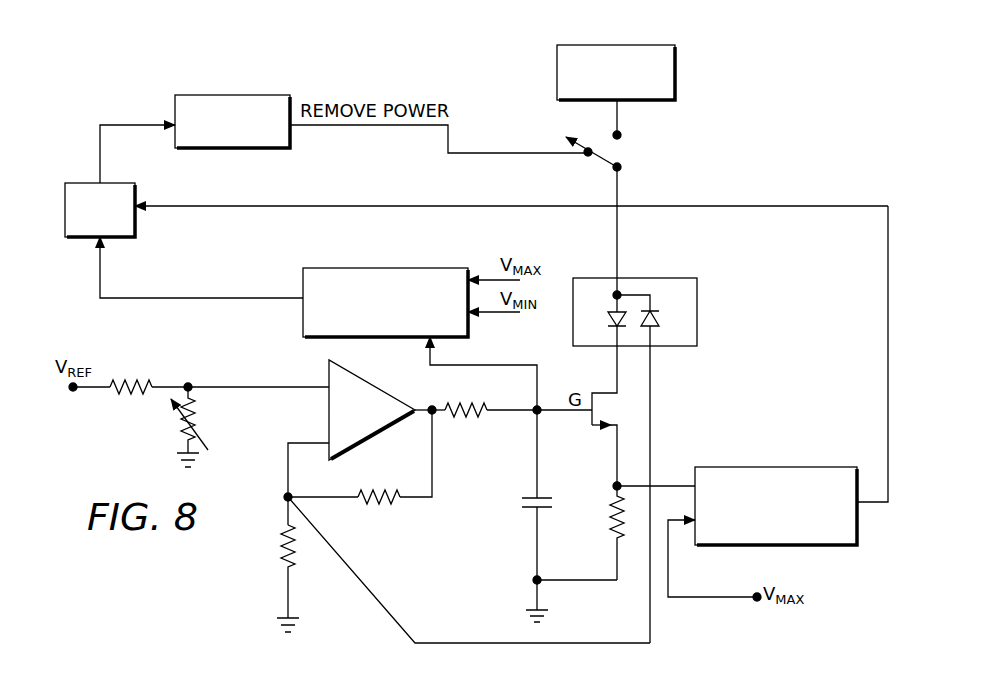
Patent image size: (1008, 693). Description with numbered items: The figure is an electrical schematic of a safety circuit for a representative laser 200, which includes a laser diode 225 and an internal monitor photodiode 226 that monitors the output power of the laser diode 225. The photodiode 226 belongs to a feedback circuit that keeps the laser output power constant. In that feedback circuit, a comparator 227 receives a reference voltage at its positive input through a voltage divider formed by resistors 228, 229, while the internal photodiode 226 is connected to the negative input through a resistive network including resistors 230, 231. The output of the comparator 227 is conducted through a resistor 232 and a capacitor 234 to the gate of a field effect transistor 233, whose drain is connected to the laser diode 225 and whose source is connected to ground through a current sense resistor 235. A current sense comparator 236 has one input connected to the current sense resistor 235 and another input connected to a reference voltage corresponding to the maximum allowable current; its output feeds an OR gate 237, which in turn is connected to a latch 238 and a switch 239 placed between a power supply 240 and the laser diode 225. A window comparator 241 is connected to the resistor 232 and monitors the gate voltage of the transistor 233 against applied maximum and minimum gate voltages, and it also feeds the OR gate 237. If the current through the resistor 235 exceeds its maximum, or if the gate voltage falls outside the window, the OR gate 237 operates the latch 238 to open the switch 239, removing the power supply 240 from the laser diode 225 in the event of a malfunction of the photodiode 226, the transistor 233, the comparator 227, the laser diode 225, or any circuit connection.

The laser 200 is at (658, 442).
The laser diode 225 is at (608, 315).
The internal monitor photodiode 226 is at (656, 328).
The comparator 227 is at (372, 443).
The resistor 228 is at (132, 376).
The resistor 229 is at (197, 420).
The resistor 230 is at (284, 535).
The resistor 231 is at (380, 505).
The resistor 232 is at (455, 418).
The field effect transistor 233 is at (595, 425).
The capacitor 234 is at (522, 500).
The current sense resistor 235 is at (612, 503).
The current sense comparator 236 is at (820, 467).
The OR gate 237 is at (67, 183).
The latch 238 is at (268, 95).
The switch 239 is at (588, 160).
The power supply 240 is at (557, 56).
The window comparator 241 is at (318, 268).